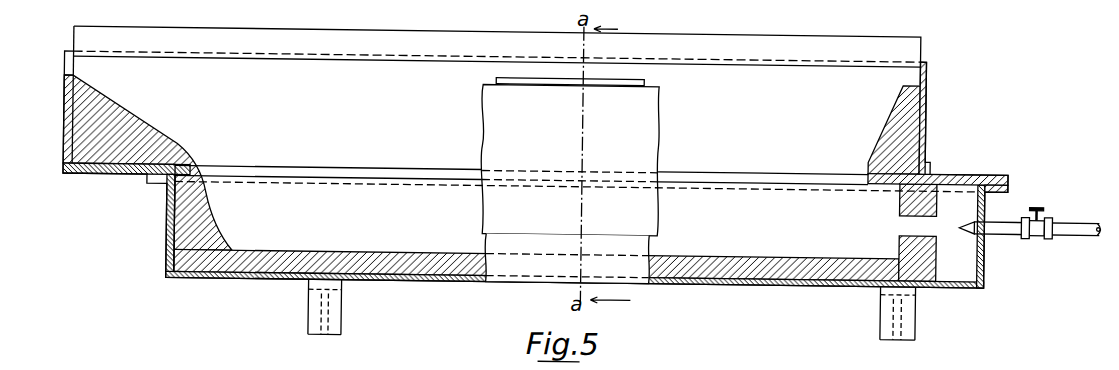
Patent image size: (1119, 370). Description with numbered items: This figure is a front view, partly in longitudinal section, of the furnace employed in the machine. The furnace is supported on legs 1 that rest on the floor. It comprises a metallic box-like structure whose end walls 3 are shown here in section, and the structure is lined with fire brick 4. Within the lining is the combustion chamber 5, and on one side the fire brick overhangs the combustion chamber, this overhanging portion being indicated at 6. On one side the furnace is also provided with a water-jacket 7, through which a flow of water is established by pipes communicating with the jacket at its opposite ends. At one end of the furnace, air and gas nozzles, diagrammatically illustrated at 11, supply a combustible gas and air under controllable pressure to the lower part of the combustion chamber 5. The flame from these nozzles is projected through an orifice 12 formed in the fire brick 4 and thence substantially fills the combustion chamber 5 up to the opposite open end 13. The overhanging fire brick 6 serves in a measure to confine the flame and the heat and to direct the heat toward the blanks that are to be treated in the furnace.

The legs 1 is at (312, 320).
The end walls 3 is at (63, 150).
The fire brick 4 is at (491, 178).
The combustion chamber 5 is at (604, 183).
The overhanging fire brick 6 is at (416, 56).
The water-jacket 7 is at (496, 74).
The air and gas nozzles 11 is at (1083, 207).
The orifice 12 is at (915, 225).
The open end 13 is at (68, 74).